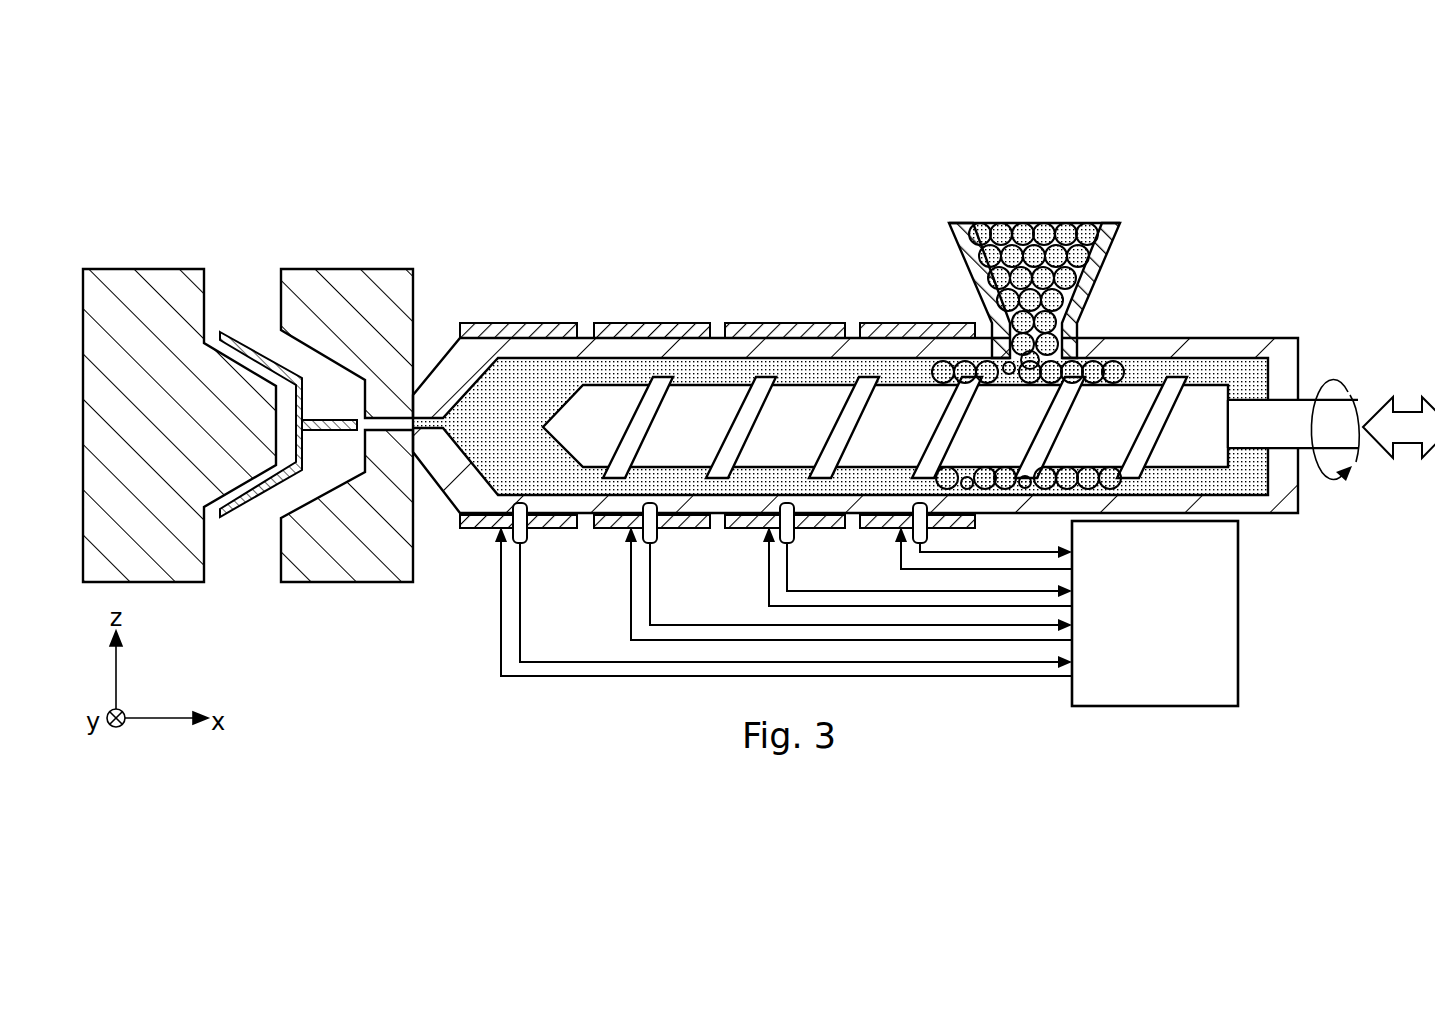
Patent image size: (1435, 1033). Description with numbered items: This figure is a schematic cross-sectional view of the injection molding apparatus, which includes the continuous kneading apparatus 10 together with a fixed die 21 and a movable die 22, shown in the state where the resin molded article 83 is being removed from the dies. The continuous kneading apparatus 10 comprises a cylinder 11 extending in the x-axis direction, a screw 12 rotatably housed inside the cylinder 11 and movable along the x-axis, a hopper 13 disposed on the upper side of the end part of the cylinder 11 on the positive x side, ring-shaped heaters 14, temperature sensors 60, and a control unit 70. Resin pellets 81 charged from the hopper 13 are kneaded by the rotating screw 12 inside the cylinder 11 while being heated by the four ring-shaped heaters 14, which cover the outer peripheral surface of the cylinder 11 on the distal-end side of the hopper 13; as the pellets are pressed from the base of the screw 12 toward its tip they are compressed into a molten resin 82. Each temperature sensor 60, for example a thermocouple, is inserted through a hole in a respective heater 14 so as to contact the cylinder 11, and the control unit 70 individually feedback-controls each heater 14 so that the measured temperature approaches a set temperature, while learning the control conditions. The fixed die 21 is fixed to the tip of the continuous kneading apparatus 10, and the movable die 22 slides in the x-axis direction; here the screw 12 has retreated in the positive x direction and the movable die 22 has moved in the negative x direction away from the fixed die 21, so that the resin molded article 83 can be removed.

The continuous kneading apparatus 10 is at (780, 232).
The cylinder 11 is at (1193, 342).
The screw 12 is at (715, 398).
The hopper 13 is at (953, 240).
The ring-shaped heaters 14 is at (470, 528).
The fixed die 21 is at (316, 272).
The movable die 22 is at (165, 272).
The temperature sensors 60 is at (520, 543).
The control unit 70 is at (1238, 615).
The resin pellets 81 is at (1058, 222).
The molten resin 82 is at (588, 358).
The resin molded article 83 is at (233, 333).